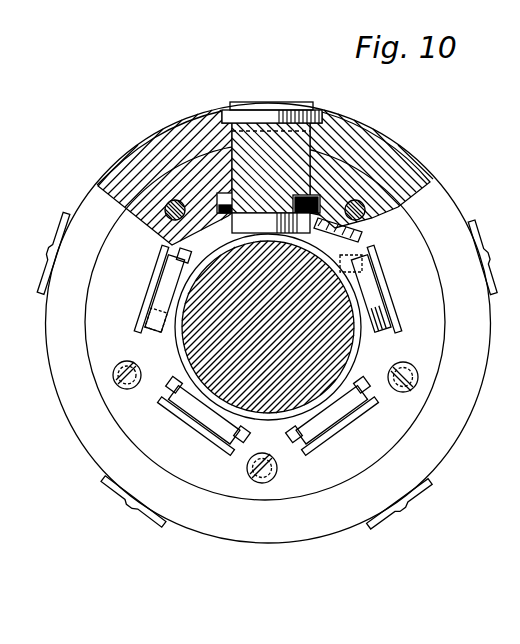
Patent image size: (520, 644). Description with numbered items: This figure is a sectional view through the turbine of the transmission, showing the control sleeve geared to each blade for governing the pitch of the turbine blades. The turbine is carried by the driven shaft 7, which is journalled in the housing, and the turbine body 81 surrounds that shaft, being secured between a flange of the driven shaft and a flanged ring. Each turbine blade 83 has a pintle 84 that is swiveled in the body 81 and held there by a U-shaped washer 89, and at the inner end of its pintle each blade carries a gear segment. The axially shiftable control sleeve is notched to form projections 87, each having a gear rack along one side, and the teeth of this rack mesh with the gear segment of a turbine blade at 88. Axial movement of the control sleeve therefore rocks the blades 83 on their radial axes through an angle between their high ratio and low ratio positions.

The driven shaft 7 is at (227, 297).
The turbine body 81 is at (376, 137).
The turbine blade 83 is at (264, 101).
The pintle 84 is at (243, 143).
The projection 87 is at (360, 233).
The meshing of rack teeth with gear segment 88 is at (363, 263).
The U-shaped washer 89 is at (233, 212).